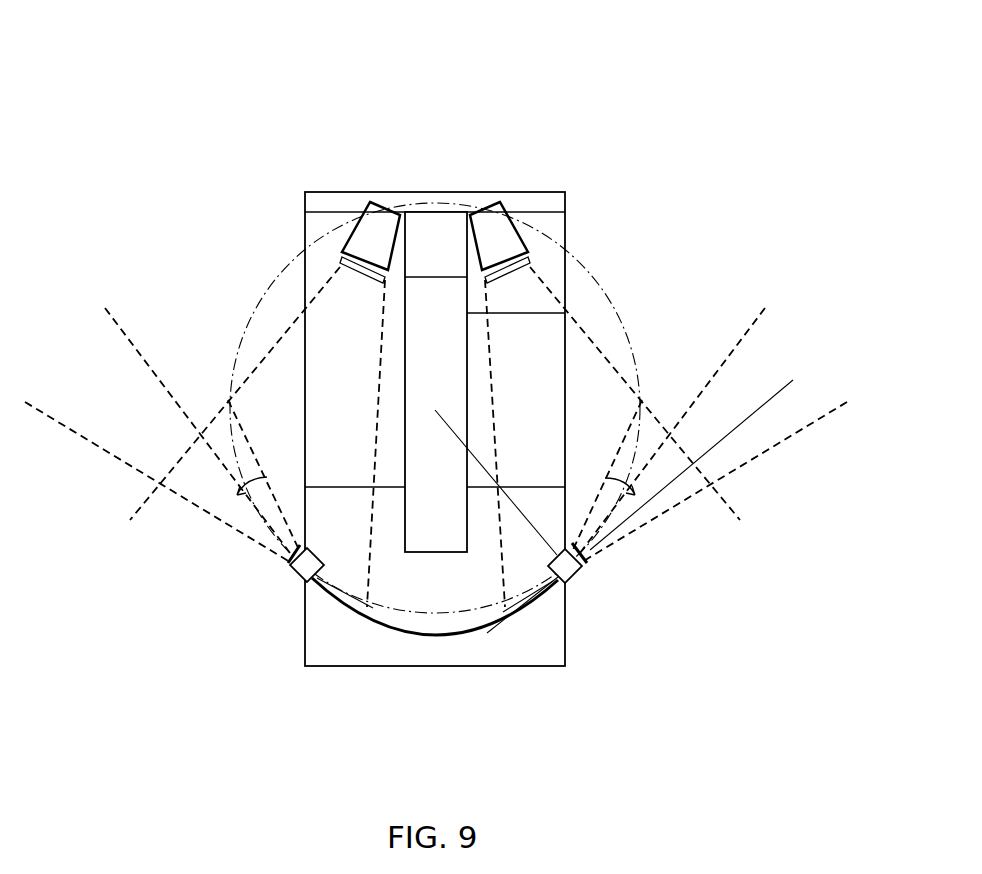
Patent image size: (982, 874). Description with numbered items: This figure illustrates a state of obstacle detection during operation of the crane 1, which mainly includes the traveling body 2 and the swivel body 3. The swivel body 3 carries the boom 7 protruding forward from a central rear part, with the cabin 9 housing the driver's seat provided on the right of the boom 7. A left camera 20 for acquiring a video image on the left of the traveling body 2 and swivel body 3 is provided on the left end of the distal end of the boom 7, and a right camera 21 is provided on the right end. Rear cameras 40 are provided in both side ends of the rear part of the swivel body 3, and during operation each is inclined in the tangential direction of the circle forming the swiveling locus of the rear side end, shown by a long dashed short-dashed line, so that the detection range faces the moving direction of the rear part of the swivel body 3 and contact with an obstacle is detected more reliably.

The crane 1 is at (144, 68).
The traveling body 2 is at (552, 157).
The swivel body 3 is at (395, 659).
The boom 7 is at (440, 218).
The cabin 9 is at (535, 428).
The left camera 20 is at (365, 215).
The right camera 21 is at (495, 214).
The rear cameras 40 is at (300, 580).